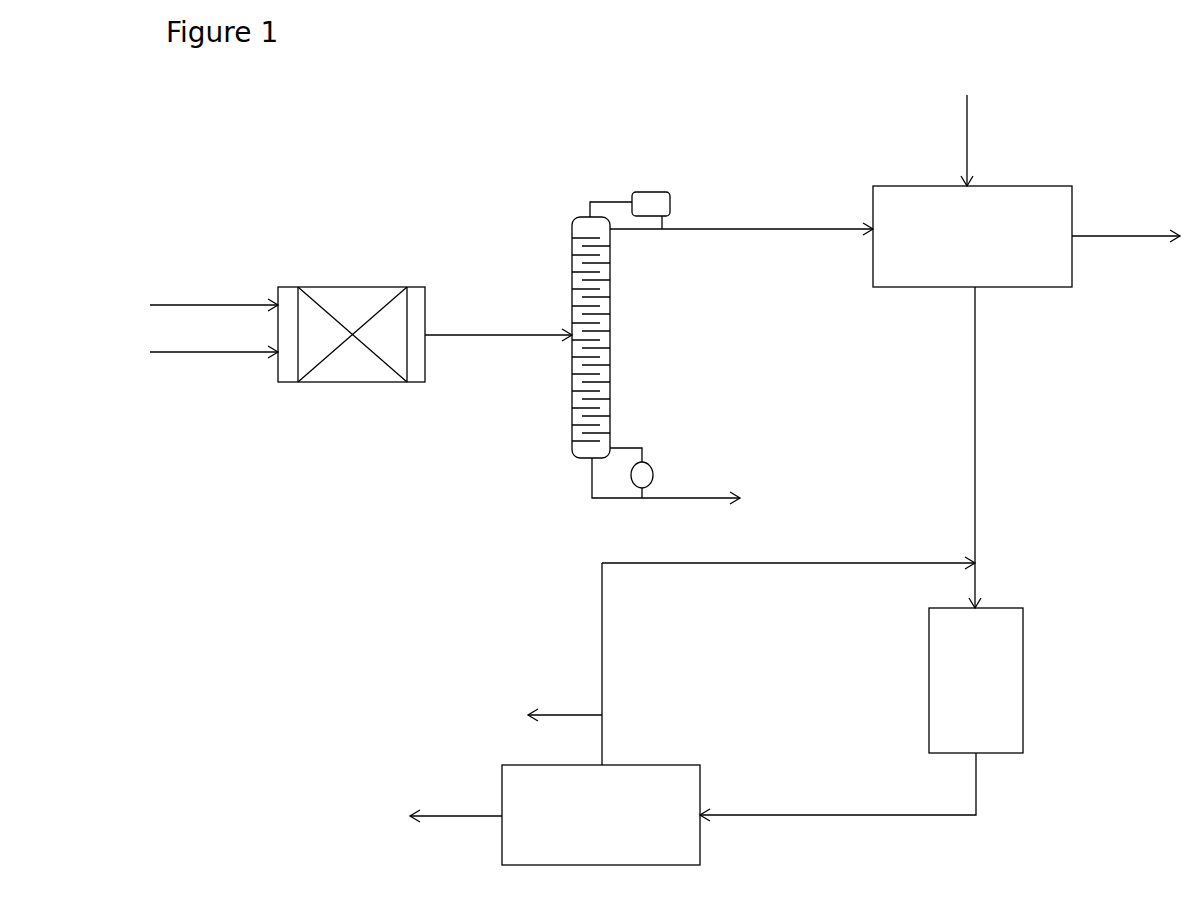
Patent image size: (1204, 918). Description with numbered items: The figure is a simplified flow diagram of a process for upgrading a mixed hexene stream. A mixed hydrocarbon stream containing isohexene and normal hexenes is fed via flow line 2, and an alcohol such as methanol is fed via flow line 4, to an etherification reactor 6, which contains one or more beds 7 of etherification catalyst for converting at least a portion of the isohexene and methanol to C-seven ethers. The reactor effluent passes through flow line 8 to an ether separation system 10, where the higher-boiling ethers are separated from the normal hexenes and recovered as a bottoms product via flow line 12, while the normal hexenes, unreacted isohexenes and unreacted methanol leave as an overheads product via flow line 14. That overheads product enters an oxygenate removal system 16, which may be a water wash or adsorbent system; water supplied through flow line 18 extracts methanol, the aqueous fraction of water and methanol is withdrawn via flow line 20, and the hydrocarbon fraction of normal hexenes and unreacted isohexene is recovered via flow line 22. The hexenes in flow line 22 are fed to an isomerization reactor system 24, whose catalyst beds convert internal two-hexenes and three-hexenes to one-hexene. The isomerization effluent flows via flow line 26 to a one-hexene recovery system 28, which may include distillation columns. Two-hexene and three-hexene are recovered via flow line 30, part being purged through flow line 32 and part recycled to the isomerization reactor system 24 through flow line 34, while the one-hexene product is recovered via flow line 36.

The flow line 2 is at (188, 305).
The flow line 4 is at (209, 353).
The etherification reactor 6 is at (427, 298).
The bed of etherification catalyst 7 is at (352, 300).
The flow line 8 is at (458, 335).
The ether separation system 10 is at (572, 227).
The flow line 12 is at (685, 498).
The flow line 14 is at (703, 229).
The oxygenate removal system 16 is at (972, 236).
The flow line 18 is at (970, 140).
The flow line 20 is at (1115, 236).
The flow line 22 is at (977, 382).
The isomerization reactor system 24 is at (1023, 613).
The flow line 26 is at (978, 795).
The 1-hexene recovery system 28 is at (601, 815).
The flow line 30 is at (605, 742).
The flow line 32 is at (572, 712).
The flow line 34 is at (818, 562).
The flow line 36 is at (440, 812).